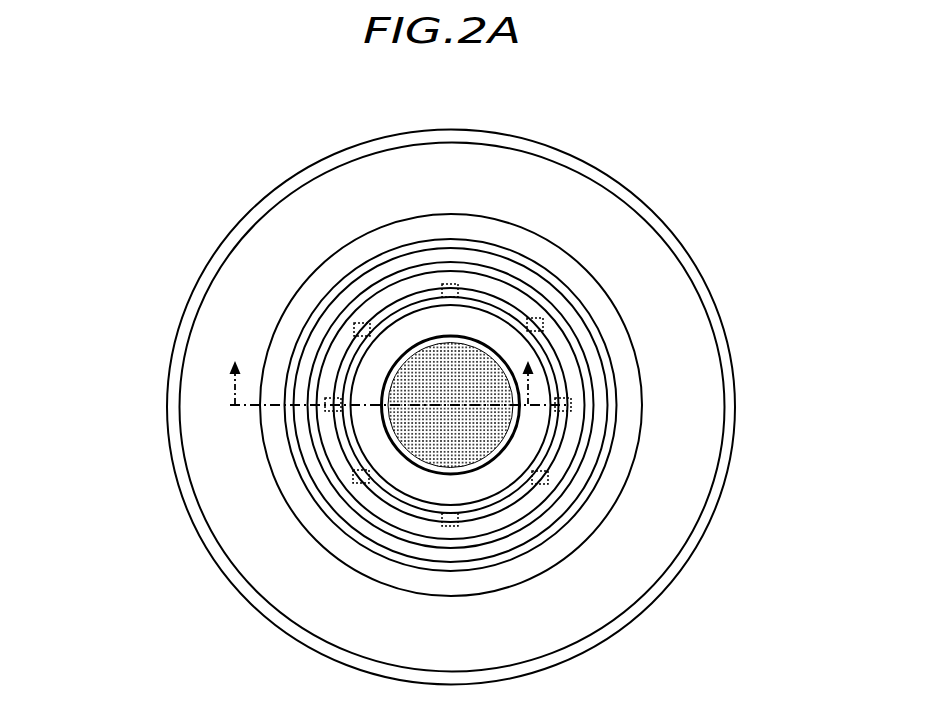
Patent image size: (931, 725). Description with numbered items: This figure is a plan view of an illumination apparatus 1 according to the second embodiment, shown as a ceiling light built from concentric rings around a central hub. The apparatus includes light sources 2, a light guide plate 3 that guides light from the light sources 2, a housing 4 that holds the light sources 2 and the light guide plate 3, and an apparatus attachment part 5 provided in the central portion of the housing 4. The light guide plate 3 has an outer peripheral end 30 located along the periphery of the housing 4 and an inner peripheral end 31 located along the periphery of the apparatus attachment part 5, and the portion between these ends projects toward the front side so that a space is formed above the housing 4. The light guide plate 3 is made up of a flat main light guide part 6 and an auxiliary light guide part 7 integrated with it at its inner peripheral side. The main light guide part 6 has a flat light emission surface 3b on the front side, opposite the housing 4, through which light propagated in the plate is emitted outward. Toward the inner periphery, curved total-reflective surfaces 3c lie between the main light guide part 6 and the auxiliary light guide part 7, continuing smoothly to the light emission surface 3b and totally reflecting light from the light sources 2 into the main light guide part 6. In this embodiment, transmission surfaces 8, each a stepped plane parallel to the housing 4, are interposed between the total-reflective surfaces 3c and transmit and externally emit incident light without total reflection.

The illumination apparatus 1 is at (684, 149).
The light sources 2 is at (530, 318).
The light guide plate 3 is at (143, 133).
The light emission surface 3b is at (643, 417).
The total-reflective surface 3c is at (545, 518).
The housing 4 is at (729, 370).
The apparatus attachment part 5 is at (427, 423).
The main light guide part 6 is at (323, 228).
The auxiliary light guide part 7 is at (400, 332).
The transmission surfaces 8 is at (347, 350).
The outer peripheral end 30 is at (180, 406).
The inner peripheral end 31 is at (392, 439).